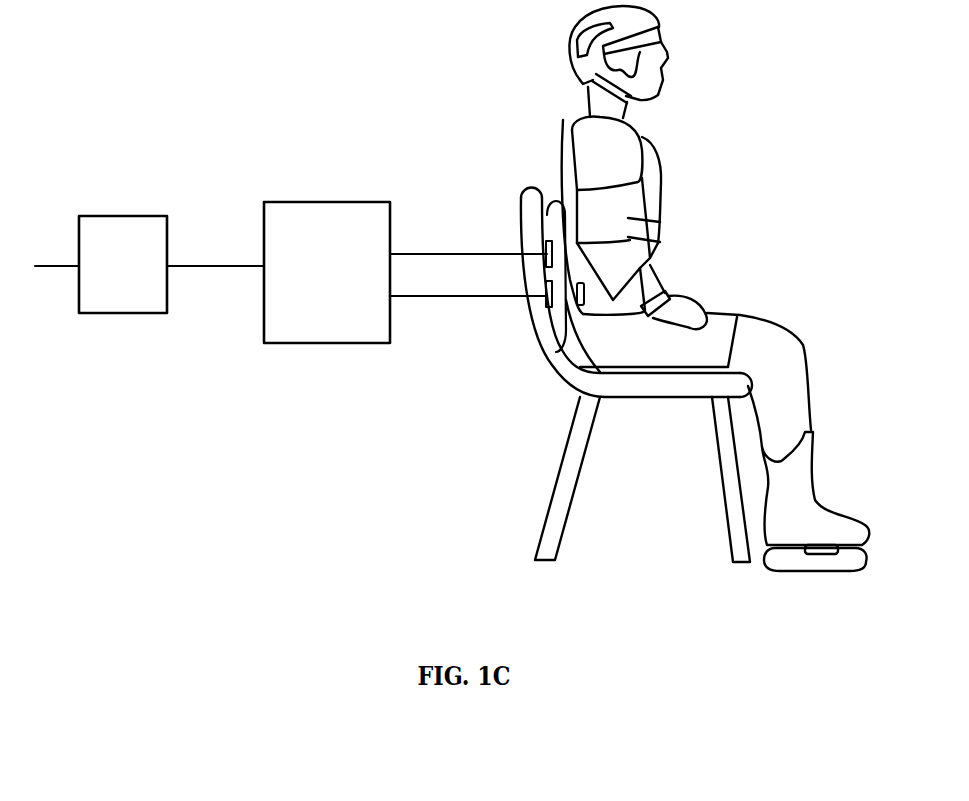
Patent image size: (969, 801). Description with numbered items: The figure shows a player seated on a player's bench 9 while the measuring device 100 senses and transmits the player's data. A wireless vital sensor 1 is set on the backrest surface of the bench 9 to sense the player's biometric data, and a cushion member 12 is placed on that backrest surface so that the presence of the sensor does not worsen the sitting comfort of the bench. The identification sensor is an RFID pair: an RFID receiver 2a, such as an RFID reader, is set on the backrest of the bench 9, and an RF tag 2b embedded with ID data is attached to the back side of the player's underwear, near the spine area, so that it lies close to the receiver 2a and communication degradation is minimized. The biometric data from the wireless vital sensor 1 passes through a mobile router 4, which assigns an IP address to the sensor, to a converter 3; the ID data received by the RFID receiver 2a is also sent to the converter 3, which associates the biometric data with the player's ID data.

The measuring device 100 is at (311, 458).
The wireless vital sensor 1 is at (545, 240).
The RFID receiver 2a is at (547, 304).
The RF tag 2b is at (583, 306).
The converter 3 is at (328, 202).
The mobile router 4 is at (128, 216).
The player's bench 9 is at (560, 382).
The cushion member 12 is at (567, 240).